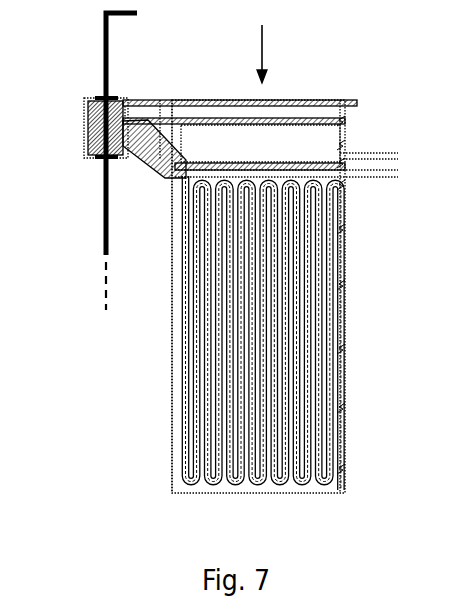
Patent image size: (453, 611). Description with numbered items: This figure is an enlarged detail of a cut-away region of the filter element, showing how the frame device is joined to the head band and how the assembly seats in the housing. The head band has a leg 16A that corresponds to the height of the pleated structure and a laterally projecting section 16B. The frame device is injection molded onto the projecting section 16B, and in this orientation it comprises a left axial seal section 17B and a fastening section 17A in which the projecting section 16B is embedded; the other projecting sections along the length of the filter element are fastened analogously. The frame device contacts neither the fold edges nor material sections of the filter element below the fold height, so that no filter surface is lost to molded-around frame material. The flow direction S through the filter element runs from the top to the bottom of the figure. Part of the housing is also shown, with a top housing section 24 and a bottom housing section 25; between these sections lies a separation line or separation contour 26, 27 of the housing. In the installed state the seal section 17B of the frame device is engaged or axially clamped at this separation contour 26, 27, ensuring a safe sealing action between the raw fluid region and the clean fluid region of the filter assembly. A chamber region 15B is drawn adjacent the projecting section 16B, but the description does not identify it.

The top housing section 24 is at (104, 40).
The bottom housing section 25 is at (103, 234).
The separation contour 26 is at (100, 97).
The separation contour 27 is at (96, 162).
The axial seal section 17B is at (103, 134).
The fastening section 17A is at (157, 152).
The laterally projecting section 16B is at (153, 148).
The chamber 15B is at (277, 146).
The head band leg 16A is at (180, 398).
The flow direction S is at (263, 52).